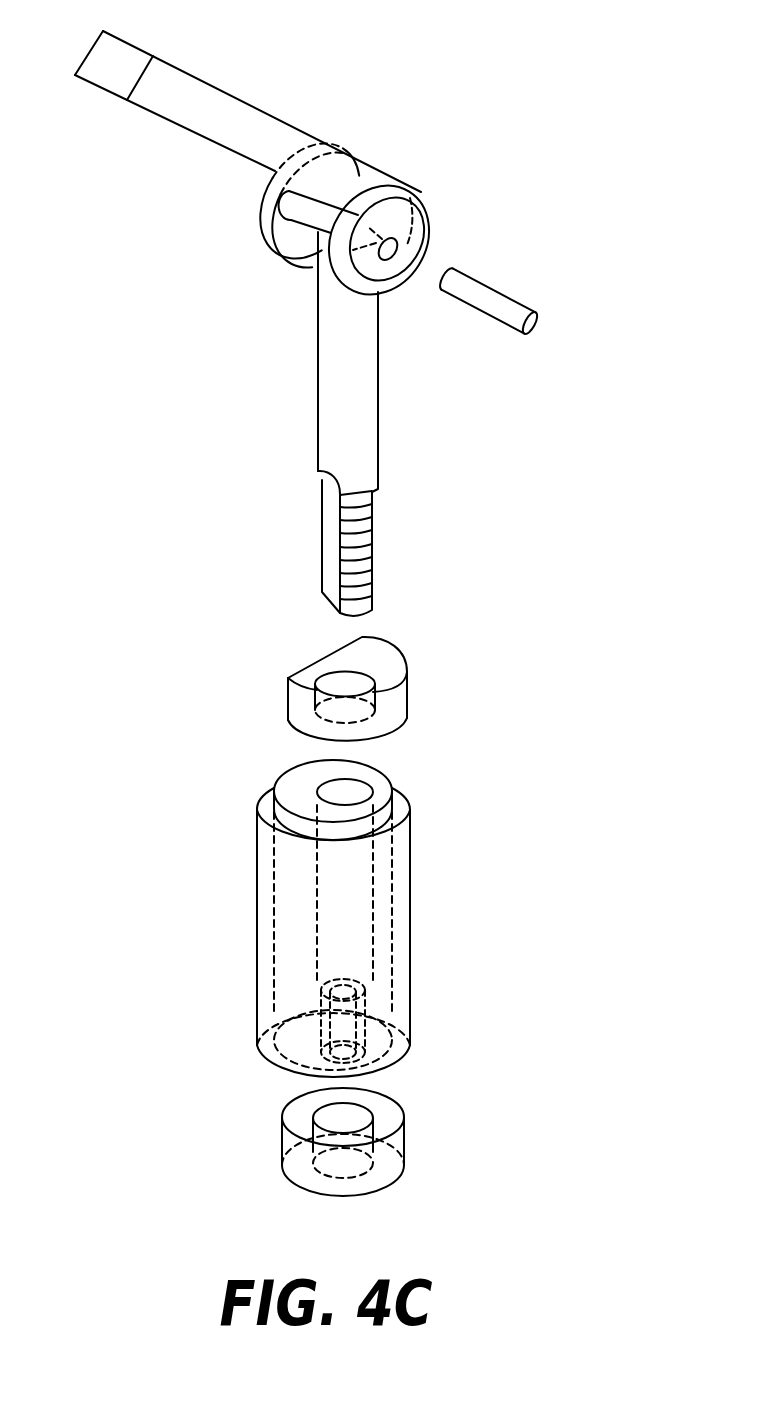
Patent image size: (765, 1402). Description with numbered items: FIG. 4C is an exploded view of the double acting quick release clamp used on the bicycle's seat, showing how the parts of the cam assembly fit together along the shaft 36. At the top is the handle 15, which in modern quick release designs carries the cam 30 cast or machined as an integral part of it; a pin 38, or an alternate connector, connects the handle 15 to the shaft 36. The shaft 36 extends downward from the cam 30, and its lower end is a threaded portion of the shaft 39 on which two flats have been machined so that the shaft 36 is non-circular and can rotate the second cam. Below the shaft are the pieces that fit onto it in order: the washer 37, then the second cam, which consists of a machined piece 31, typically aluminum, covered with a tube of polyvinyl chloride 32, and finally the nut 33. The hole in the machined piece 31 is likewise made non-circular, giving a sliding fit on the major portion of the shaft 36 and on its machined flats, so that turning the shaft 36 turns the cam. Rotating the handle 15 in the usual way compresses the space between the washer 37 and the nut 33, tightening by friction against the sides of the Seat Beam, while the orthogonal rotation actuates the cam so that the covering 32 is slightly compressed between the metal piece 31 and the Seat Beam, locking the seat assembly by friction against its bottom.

The handle 15 is at (150, 120).
The cam 30 is at (482, 200).
The machined piece 31 is at (298, 787).
The tube of polyvinyl chloride 32 is at (257, 897).
The nut 33 is at (287, 1143).
The shaft 36 is at (327, 343).
The washer 37 is at (330, 665).
The pin 38 is at (502, 302).
The threaded portion of the shaft 39 is at (325, 552).